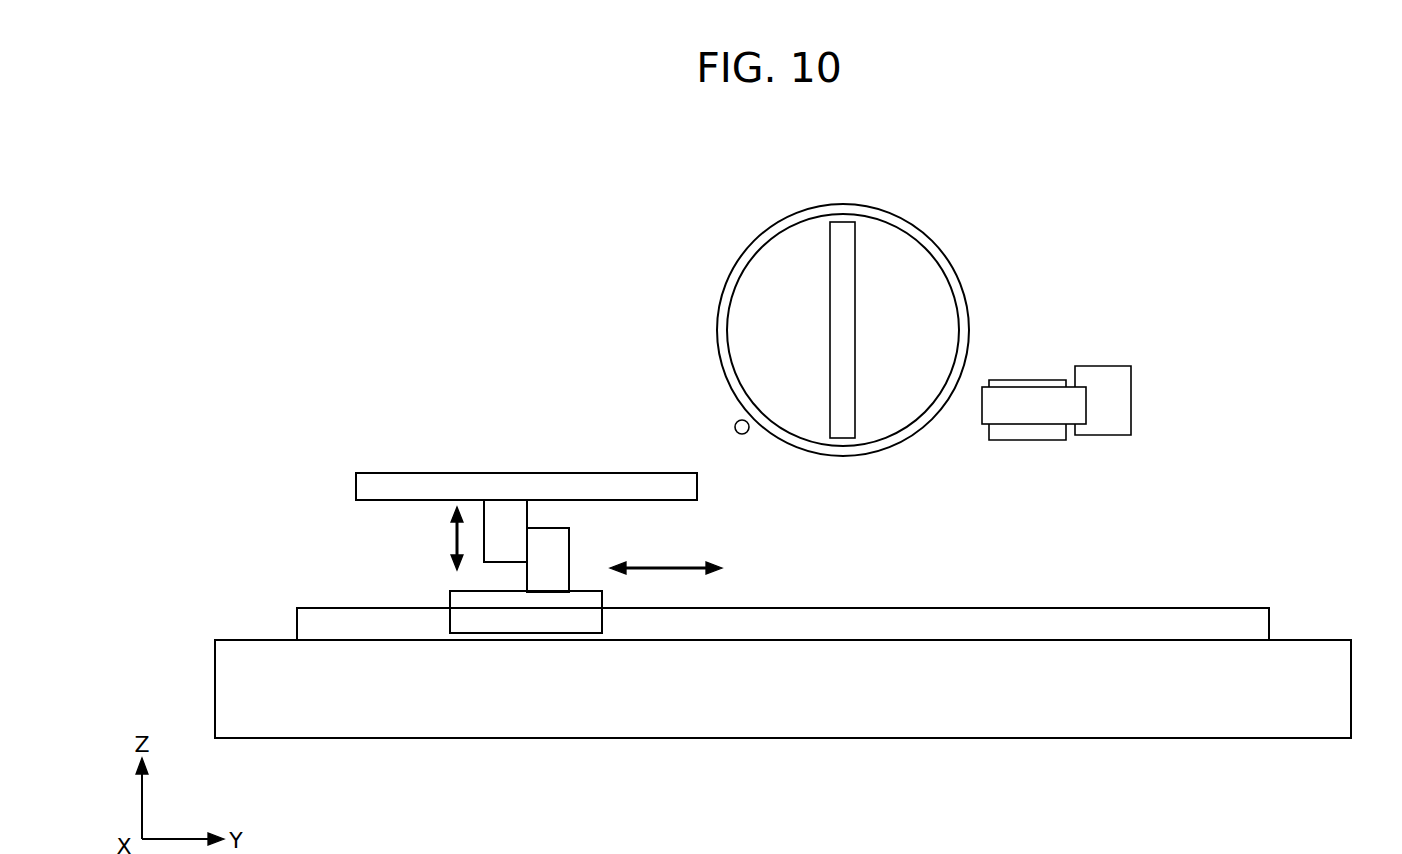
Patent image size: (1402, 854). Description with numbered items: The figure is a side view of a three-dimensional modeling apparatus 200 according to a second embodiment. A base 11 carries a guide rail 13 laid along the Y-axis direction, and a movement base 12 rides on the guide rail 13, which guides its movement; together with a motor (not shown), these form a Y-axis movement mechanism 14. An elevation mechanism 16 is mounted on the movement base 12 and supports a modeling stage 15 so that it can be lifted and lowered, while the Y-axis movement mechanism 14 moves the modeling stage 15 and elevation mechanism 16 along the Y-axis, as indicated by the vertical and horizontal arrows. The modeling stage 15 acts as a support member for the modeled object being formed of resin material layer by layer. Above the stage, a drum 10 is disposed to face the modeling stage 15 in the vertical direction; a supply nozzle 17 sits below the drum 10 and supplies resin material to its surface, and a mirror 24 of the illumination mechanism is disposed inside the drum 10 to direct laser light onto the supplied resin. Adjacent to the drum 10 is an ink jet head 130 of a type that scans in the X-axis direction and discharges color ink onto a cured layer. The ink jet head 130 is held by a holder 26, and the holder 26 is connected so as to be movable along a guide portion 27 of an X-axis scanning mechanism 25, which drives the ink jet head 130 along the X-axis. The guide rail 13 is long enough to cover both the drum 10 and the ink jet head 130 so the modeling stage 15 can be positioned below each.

The 3D modeling apparatus 200 is at (652, 210).
The drum 10 is at (935, 243).
The mirror 24 is at (843, 285).
The supply nozzle 17 is at (733, 428).
The X-axis scanning mechanism 25 is at (1107, 348).
The holder 26 is at (1032, 395).
The guide portion 27 is at (1120, 423).
The ink jet head 130 is at (1000, 430).
The modeling stage 15 is at (370, 486).
The elevation mechanism 16 is at (570, 545).
The Y-axis movement mechanism 14 is at (243, 553).
The movement base 12 is at (455, 598).
The guide rail 13 is at (310, 611).
The base 11 is at (1336, 692).